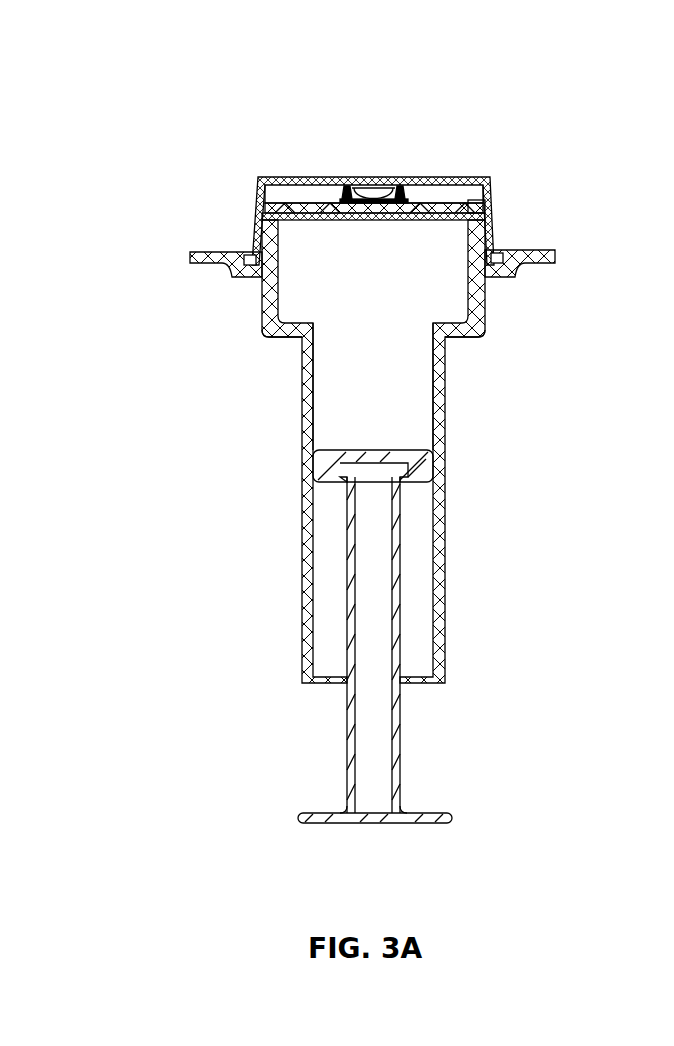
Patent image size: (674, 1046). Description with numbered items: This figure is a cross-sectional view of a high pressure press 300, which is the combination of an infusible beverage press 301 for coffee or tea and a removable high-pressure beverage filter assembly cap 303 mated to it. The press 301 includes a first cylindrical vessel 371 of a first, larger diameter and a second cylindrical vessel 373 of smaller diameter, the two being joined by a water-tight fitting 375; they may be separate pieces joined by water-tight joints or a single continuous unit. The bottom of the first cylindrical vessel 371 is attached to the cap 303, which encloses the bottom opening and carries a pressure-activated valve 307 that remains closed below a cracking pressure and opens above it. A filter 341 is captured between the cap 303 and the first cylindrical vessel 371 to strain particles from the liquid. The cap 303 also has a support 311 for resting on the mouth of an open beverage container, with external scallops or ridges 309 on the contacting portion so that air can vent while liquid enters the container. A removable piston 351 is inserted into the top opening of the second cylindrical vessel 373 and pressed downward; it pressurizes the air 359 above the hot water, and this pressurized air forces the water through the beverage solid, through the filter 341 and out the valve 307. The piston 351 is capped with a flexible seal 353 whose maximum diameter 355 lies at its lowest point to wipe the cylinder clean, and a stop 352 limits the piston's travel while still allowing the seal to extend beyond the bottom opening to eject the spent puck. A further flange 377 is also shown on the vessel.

The high pressure press 300 is at (548, 85).
The infusible beverage press 301 is at (154, 520).
The high-pressure beverage filter assembly cap 303 is at (216, 177).
The pressure-activated valve 307 is at (328, 190).
The external scallops or ridges 309 is at (437, 163).
The support 311 is at (509, 206).
The filter 341 is at (270, 218).
The first cylindrical vessel 371 is at (240, 290).
The second flange 377 is at (579, 260).
The water-tight fitting 375 is at (507, 332).
The air 359 is at (416, 416).
The maximum diameter 355 is at (288, 456).
The flexible seal 353 is at (315, 482).
The second cylindrical vessel 373 is at (435, 562).
The piston 351 is at (397, 773).
The stop 352 is at (300, 821).